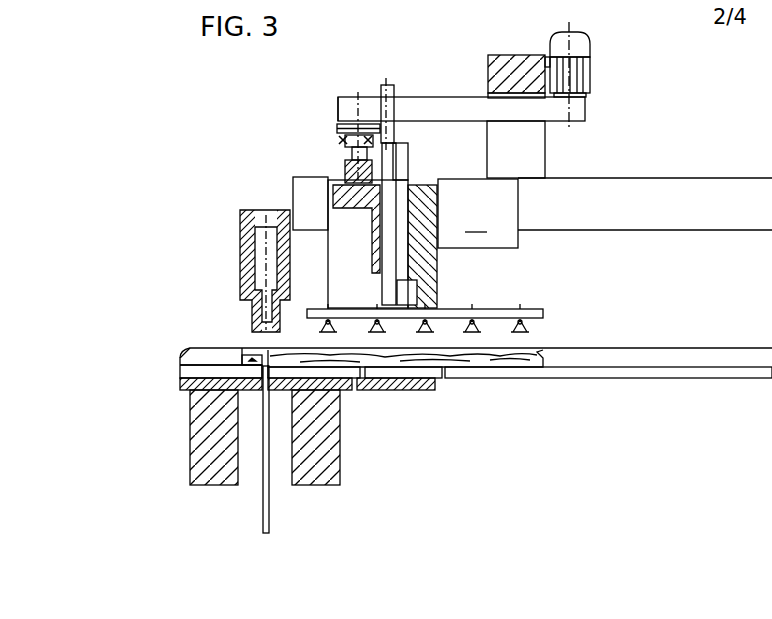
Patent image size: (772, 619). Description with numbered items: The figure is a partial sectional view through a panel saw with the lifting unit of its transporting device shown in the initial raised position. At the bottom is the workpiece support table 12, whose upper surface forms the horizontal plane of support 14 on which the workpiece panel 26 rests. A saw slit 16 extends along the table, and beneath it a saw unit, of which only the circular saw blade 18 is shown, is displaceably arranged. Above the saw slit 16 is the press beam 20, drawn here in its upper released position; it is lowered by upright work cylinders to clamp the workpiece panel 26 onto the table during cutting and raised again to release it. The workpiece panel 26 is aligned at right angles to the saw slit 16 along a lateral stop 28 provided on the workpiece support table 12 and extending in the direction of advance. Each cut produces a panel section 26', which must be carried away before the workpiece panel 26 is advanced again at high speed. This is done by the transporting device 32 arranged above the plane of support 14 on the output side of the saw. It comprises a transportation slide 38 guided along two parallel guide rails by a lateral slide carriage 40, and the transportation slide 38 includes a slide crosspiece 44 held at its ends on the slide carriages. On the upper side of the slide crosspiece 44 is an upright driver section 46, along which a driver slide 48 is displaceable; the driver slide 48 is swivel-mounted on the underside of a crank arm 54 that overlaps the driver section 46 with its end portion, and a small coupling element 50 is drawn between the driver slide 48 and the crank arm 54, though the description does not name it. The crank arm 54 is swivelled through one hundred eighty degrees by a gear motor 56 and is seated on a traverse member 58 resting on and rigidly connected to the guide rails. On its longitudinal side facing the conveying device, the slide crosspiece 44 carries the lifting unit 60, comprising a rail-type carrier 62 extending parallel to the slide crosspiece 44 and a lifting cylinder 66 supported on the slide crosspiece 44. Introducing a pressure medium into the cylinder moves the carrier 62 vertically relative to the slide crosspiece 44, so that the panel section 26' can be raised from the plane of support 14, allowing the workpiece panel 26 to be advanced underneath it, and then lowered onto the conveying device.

The workpiece support table 12 is at (174, 383).
The plane of support 14 is at (182, 347).
The saw slit 16 is at (267, 366).
The circular saw blade 18 is at (269, 512).
The press beam 20 is at (243, 255).
The workpiece panel 26 is at (218, 327).
The panel section 26' is at (460, 334).
The lateral stop 28 is at (640, 352).
The transporting device 32 is at (488, 272).
The transportation slide 38 is at (522, 219).
The slide carriage 40 is at (478, 213).
The slide crosspiece 44 is at (327, 178).
The driver section 46 is at (353, 158).
The driver slide 48 is at (338, 118).
The coupling 50 is at (340, 143).
The crank arm 54 is at (427, 115).
The gear motor 56 is at (568, 72).
The traverse member 58 is at (498, 67).
The lifting unit 60 is at (414, 172).
The rail-type carrier 62 is at (420, 222).
The lifting cylinder 66 is at (383, 83).